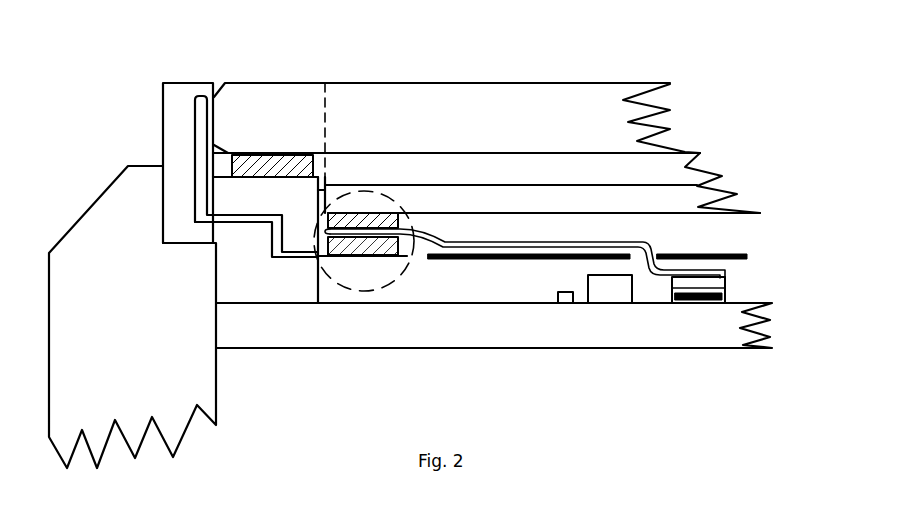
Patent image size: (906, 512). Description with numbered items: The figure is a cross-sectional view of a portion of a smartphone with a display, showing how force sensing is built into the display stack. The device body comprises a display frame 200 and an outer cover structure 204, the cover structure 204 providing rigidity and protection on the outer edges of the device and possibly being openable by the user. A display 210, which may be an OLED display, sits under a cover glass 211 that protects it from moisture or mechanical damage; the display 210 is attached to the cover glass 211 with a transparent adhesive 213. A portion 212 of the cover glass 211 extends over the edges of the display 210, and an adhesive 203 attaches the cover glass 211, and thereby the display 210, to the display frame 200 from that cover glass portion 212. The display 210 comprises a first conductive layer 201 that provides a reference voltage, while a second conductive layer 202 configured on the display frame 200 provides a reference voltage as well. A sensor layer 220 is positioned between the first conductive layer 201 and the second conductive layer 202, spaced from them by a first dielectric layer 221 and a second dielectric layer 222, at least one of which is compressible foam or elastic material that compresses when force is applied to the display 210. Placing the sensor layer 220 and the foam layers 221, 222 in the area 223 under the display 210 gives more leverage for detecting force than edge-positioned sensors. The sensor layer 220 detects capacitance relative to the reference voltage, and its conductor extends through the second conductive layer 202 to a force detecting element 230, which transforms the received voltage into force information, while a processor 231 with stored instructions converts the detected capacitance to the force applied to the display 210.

The display frame 200 is at (173, 115).
The first conductive layer 201 is at (625, 184).
The second conductive layer 202 is at (361, 248).
The adhesive 203 is at (250, 160).
The cover structure 204 is at (100, 207).
The display 210 is at (475, 170).
The cover glass 211 is at (577, 120).
The portion of the cover glass 212 is at (277, 112).
The transparent adhesive 213 is at (618, 155).
The sensor layer 220 is at (338, 234).
The first dielectric layer 221 is at (358, 214).
The second dielectric layer 222 is at (395, 243).
The area under the display 223 is at (362, 293).
The force detecting element 230 is at (700, 296).
The processor 231 is at (618, 293).